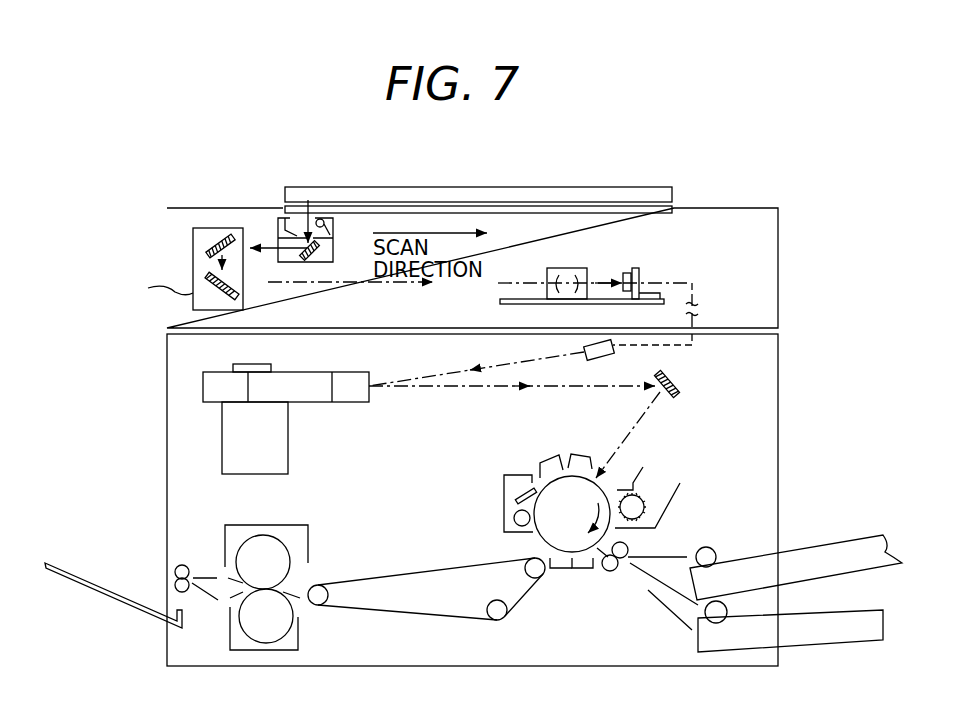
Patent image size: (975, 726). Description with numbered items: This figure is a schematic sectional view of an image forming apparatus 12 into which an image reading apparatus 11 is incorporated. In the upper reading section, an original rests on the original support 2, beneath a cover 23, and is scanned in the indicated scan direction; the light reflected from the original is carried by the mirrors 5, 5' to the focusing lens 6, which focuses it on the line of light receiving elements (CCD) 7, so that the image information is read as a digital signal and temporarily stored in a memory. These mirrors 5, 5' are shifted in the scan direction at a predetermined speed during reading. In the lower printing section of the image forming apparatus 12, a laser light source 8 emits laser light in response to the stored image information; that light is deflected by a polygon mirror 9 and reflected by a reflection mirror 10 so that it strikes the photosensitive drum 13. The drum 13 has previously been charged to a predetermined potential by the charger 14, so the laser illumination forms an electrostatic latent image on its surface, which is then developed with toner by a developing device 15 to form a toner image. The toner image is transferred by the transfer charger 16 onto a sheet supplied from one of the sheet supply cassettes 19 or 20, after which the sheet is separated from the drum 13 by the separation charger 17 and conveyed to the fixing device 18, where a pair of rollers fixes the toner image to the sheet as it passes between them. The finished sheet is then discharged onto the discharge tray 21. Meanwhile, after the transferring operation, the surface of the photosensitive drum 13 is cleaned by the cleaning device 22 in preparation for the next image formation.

The original support 2 is at (553, 205).
The original cover 23 is at (427, 186).
The mirror 5 is at (317, 241).
The mirror 5' is at (227, 231).
The focusing lens 6 is at (565, 268).
The light receiving elements (CCD) 7 is at (627, 272).
The laser light source 8 is at (606, 358).
The polygon mirror 9 is at (303, 403).
The reflection mirror 10 is at (669, 376).
The image reading apparatus 11 is at (723, 207).
The image forming apparatus 12 is at (780, 375).
The photosensitive drum 13 is at (546, 483).
The charger 14 is at (583, 453).
The developing unit 15 is at (662, 513).
The transfer charger 16 is at (582, 572).
The separation charger 17 is at (558, 572).
The fixing device 18 is at (285, 520).
The sheet supply cassette 19 is at (873, 572).
The sheet supply cassette 20 is at (857, 642).
The discharge tray 21 is at (102, 597).
The cleaning device 22 is at (504, 500).